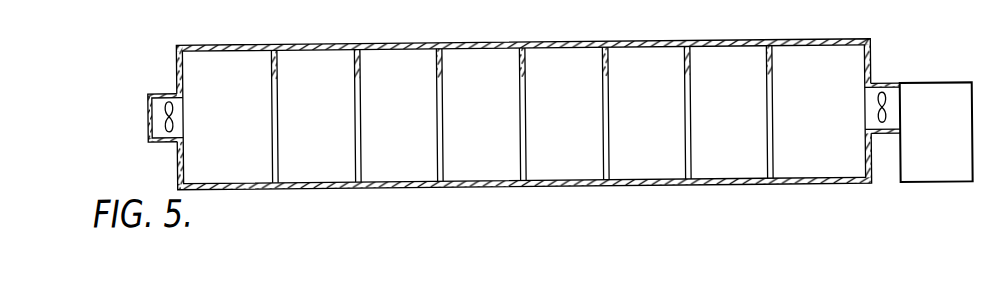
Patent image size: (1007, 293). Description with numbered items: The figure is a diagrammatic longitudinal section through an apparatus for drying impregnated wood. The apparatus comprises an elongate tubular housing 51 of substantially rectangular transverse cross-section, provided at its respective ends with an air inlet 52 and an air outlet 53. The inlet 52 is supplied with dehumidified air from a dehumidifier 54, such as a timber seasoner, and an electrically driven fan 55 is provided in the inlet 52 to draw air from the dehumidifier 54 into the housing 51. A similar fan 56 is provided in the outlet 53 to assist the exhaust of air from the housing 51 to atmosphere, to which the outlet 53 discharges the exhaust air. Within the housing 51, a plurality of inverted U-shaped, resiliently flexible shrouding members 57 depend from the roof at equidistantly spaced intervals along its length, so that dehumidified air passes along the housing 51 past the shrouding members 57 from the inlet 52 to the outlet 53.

The elongate tubular housing 51 is at (390, 42).
The air inlet 52 is at (877, 86).
The air outlet 53 is at (160, 90).
The dehumidifier 54 is at (945, 157).
The electrically driven fan 55 is at (885, 103).
The fan 56 is at (166, 116).
The shrouding members 57 is at (278, 131).